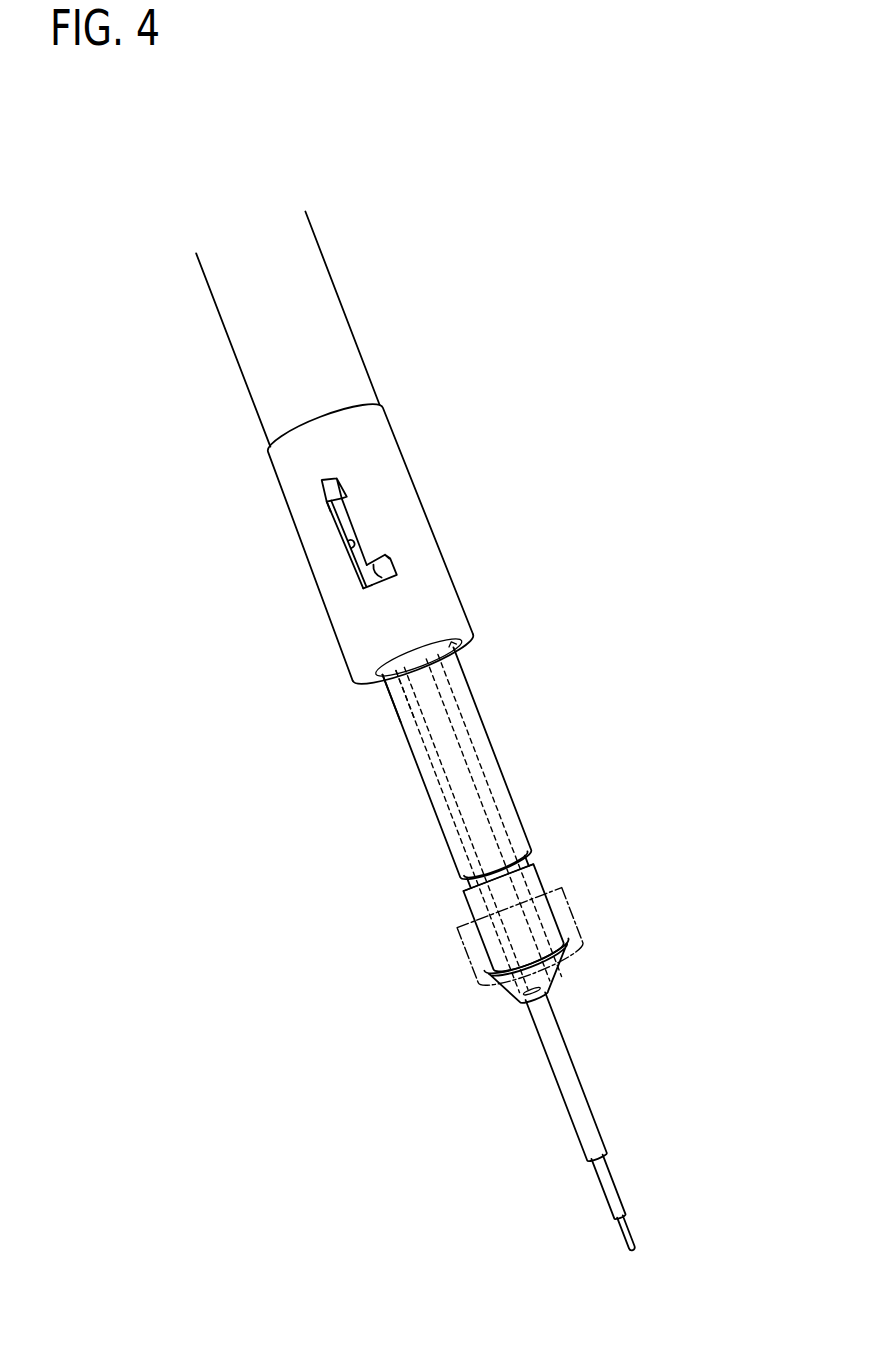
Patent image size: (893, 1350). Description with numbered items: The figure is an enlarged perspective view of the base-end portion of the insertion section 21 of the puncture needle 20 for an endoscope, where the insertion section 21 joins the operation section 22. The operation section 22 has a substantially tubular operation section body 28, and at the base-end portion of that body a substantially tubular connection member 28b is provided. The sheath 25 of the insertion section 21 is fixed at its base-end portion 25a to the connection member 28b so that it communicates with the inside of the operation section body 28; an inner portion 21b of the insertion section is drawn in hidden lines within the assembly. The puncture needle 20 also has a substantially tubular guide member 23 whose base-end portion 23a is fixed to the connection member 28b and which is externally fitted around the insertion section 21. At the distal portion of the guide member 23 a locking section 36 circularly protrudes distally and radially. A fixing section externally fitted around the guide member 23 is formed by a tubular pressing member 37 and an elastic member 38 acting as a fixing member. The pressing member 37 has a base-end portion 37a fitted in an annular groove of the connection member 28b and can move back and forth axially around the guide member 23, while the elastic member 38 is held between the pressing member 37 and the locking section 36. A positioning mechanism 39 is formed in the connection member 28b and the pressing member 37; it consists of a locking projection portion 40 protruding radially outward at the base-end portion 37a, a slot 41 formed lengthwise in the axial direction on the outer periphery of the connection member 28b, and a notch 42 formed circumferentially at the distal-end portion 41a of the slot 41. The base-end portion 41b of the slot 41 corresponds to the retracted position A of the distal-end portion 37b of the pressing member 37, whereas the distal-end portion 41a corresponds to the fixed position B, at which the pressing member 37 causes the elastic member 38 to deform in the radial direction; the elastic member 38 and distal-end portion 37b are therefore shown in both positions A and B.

The puncture needle for the endoscope 20 is at (641, 471).
The insertion section 21 is at (669, 1147).
The inner portion of optical fiber cable 21b is at (462, 778).
The operation section 22 is at (343, 298).
The guide member 23 is at (463, 730).
The base-end portion of the guide member 23a is at (450, 652).
The sheath 25 is at (566, 1067).
The base-end portion of the sheath 25a is at (405, 690).
The operation section body 28 is at (358, 344).
The connection member 28b is at (448, 566).
The locking section 36 is at (562, 975).
The pressing member 37 is at (348, 508).
The base-end portion of the pressing member 37a is at (400, 732).
The distal-end portion of the pressing member 37b is at (468, 884).
The elastic member 38 is at (535, 870).
The positioning mechanism 39 is at (215, 500).
The locking projection portion 40 is at (331, 492).
The slot 41 is at (350, 553).
The distal-end portion of the slot 41a is at (362, 585).
The base-end portion of the slot 41b is at (343, 484).
The notch 42 is at (367, 570).
The retracted position A is at (512, 860).
The fixed position B is at (541, 910).